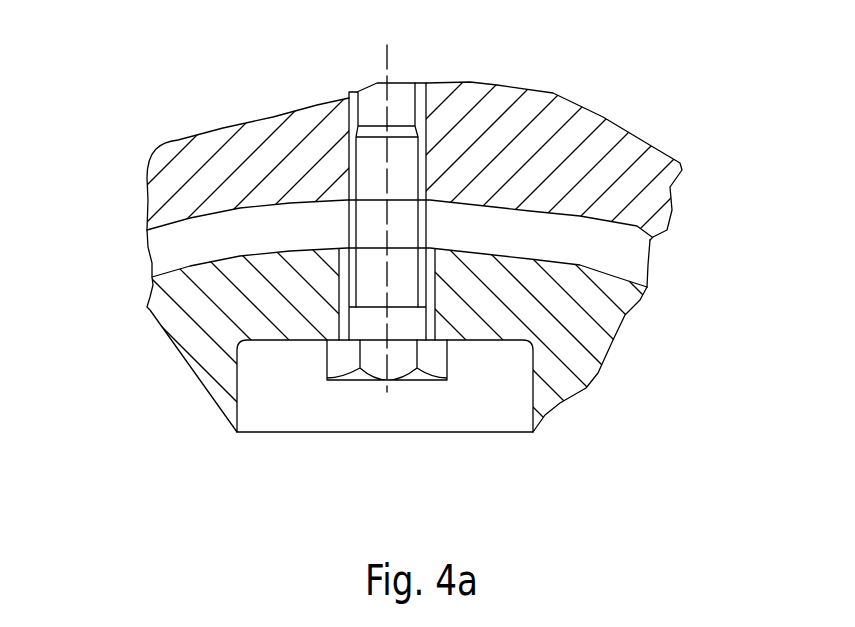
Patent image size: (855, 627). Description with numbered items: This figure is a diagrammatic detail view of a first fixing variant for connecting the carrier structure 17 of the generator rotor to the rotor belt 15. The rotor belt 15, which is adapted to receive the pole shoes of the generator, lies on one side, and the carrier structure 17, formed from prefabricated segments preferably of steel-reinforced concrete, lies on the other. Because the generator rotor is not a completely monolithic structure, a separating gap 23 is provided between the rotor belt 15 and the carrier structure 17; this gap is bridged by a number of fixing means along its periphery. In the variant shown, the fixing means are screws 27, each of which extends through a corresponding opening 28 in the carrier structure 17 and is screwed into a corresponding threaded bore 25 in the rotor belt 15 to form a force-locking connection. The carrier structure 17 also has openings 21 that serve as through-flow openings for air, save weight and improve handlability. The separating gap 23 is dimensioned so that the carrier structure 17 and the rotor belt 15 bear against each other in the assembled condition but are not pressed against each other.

The rotor belt 15 is at (233, 160).
The carrier structure 17 is at (177, 310).
The opening 21 is at (432, 405).
The separating gap 23 is at (615, 254).
The threaded bore 25 is at (417, 96).
The screw 27 is at (353, 110).
The opening 28 is at (328, 294).